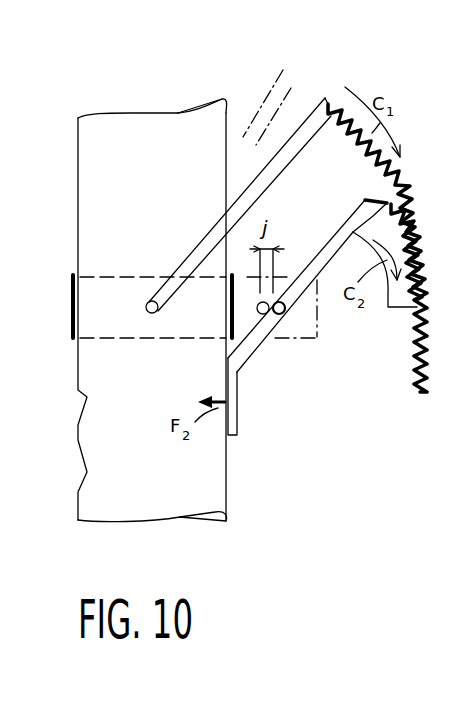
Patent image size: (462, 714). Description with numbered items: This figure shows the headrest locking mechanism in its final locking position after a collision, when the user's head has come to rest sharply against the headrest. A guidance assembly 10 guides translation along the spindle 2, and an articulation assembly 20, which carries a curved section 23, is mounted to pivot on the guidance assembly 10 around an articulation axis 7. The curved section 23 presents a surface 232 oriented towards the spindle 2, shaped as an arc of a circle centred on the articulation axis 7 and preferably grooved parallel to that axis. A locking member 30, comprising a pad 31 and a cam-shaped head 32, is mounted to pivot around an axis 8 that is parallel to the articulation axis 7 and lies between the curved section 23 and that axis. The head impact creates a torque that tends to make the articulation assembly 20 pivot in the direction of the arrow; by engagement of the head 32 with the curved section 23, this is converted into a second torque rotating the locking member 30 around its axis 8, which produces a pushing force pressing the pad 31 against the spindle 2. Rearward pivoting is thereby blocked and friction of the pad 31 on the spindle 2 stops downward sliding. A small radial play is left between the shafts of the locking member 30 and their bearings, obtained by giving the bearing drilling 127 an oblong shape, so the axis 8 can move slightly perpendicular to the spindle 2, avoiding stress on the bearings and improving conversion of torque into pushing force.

The spindle 2 is at (80, 145).
The guidance assembly 10 is at (73, 280).
The articulation axis 7 is at (152, 301).
The articulation assembly 20 is at (305, 104).
The curved section 23 is at (340, 112).
The locking member 30 is at (324, 244).
The pad 31 is at (222, 417).
The head 32 is at (410, 197).
The axis 8 is at (277, 316).
The bearing 127 is at (290, 316).
The surface 232 is at (411, 376).